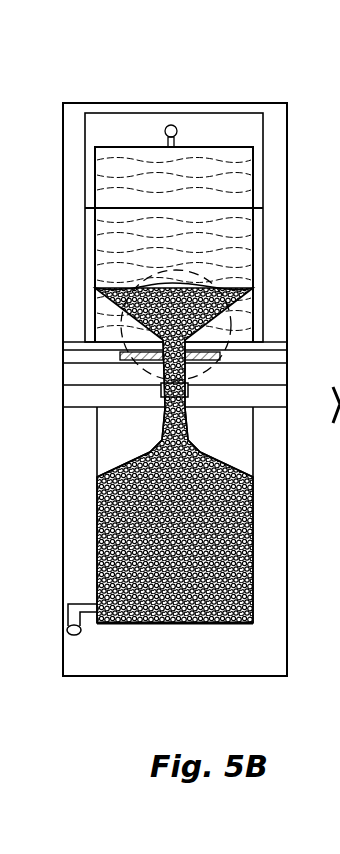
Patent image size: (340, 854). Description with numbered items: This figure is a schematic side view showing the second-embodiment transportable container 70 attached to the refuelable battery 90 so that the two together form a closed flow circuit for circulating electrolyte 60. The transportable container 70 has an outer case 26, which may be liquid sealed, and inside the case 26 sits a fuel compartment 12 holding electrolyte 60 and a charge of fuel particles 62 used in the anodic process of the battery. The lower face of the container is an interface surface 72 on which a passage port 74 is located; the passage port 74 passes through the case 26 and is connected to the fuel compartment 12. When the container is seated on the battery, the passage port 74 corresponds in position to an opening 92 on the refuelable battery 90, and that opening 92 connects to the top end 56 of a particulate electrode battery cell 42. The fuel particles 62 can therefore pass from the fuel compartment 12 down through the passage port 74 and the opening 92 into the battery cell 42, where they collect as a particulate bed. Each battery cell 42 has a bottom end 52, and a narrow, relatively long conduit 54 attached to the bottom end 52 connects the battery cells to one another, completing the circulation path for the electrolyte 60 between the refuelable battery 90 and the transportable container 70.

The transportable container 70 is at (289, 94).
The case 26 is at (92, 103).
The fuel compartment 12 is at (263, 222).
The electrolyte 60 is at (217, 172).
The passage port 74 is at (205, 340).
The interface surface 72 is at (118, 352).
The opening 92 is at (160, 372).
The top end 56 is at (115, 407).
The fuel particles 62 is at (188, 428).
The particulate electrode battery cell 42 is at (100, 525).
The conduit 54 is at (88, 613).
The bottom end 52 is at (143, 623).
The refuelable battery 90 is at (286, 687).